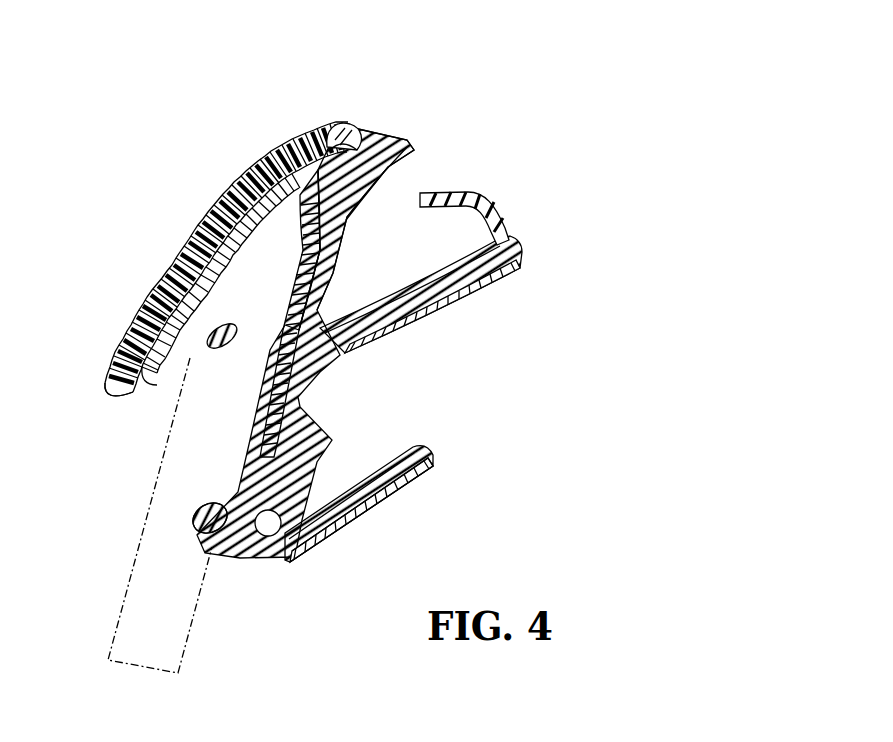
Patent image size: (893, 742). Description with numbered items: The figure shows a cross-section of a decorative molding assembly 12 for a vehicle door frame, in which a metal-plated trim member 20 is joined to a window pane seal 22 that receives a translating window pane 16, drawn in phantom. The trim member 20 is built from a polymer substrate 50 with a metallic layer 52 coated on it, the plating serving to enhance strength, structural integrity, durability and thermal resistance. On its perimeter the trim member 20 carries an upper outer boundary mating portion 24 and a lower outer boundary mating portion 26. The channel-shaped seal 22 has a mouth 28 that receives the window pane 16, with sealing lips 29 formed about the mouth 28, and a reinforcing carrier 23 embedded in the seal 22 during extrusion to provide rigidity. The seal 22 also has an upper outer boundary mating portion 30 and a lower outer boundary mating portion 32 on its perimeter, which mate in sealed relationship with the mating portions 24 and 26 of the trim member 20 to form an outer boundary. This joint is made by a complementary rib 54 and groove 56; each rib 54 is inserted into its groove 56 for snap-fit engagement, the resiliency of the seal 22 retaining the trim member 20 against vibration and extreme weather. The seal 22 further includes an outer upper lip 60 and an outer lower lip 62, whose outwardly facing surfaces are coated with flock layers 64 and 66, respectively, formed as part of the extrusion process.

The decorative molding assembly 12 is at (497, 114).
The translating window pane 16 is at (195, 630).
The chrome-plated trim member 20 is at (301, 128).
The window pane seal 22 is at (427, 404).
The reinforcing carrier 23 is at (280, 540).
The upper outer boundary mating portion 24 is at (350, 130).
The lower outer boundary mating portion 26 is at (125, 395).
The mouth 28 is at (214, 553).
The sealing lips 29 is at (238, 335).
The upper outer boundary mating portion 30 is at (396, 130).
The lower outer boundary mating portion 32 is at (150, 418).
The polymer substrate 50 is at (345, 135).
The metallic layer 52 is at (270, 157).
The rib 54 is at (400, 180).
The groove 56 is at (352, 203).
The outer upper lip 60 is at (503, 212).
The outer lower lip 62 is at (392, 445).
The flock layer 64 is at (493, 290).
The flock layer 66 is at (392, 500).